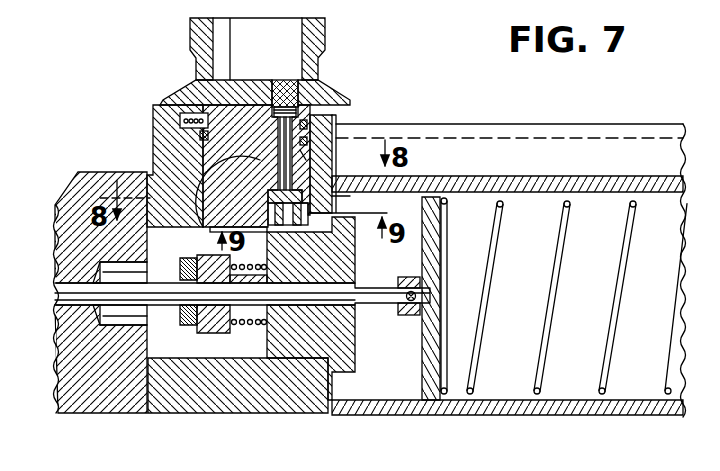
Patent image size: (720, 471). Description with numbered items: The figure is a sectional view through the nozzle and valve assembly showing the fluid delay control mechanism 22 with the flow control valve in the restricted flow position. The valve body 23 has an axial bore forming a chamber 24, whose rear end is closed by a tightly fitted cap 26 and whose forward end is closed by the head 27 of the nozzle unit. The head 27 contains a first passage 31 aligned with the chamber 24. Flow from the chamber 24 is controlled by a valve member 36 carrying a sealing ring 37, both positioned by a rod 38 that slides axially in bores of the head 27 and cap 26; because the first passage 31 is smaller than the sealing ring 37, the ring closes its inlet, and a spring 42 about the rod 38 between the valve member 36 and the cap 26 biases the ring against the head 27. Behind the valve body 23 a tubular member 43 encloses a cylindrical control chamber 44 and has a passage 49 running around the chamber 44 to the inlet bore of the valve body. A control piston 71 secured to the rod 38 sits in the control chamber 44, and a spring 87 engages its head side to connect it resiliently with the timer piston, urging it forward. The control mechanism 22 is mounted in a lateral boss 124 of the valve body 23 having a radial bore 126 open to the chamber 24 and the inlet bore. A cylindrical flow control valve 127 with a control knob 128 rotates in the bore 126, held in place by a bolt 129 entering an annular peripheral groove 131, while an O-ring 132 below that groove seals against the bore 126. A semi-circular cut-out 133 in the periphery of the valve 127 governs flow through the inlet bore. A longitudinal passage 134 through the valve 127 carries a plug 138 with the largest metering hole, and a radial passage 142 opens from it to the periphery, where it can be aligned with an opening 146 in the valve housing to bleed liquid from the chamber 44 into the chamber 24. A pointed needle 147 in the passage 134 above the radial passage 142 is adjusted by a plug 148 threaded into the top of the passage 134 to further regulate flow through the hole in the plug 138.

The fluid delay control mechanism 22 is at (183, 77).
The valve body 23 is at (205, 398).
The chamber 24 is at (176, 332).
The cap 26 is at (344, 368).
The head 27 is at (82, 398).
The first passage 31 is at (138, 327).
The valve member 36 is at (222, 333).
The sealing ring 37 is at (185, 330).
The rod 38 is at (390, 303).
The spring 42 is at (247, 326).
The tubular member 43 is at (632, 410).
The control chamber 44 is at (583, 357).
The passage 49 is at (590, 138).
The control piston 71 is at (422, 354).
The spring 87 is at (538, 398).
The lateral boss 124 is at (322, 125).
The radial bore 126 is at (198, 168).
The flow control valve 127 is at (180, 152).
The control knob 128 is at (318, 32).
The bolt 129 is at (180, 118).
The annular peripheral groove 131 is at (310, 118).
The O-ring 132 is at (308, 142).
The semi-circular cut-out 133 is at (192, 222).
The longitudinal passage 134 is at (306, 156).
The plug 138 is at (256, 222).
The radial passage 142 is at (300, 210).
The opening 146 is at (350, 196).
The needle 147 is at (278, 125).
The plug 148 is at (278, 95).